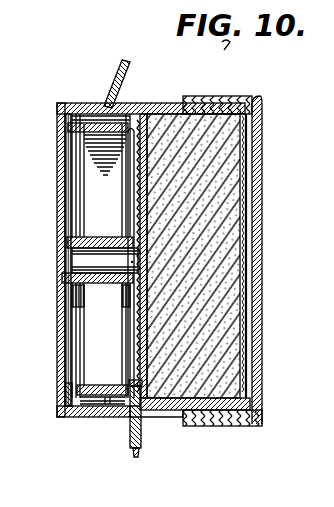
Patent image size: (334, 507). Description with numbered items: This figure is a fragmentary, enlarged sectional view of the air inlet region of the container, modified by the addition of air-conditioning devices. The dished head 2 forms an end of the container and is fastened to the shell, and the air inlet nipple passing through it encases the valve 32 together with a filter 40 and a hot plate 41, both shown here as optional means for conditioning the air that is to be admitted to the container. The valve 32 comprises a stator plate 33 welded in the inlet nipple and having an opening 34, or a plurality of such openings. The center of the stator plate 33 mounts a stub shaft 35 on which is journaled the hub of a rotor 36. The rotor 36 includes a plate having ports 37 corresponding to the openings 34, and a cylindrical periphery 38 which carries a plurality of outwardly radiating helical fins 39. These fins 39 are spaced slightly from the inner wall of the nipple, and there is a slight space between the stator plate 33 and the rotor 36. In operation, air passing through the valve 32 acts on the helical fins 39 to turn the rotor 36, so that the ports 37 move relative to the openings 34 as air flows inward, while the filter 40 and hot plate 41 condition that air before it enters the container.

The dished head 2 is at (131, 64).
The valve 32 is at (53, 378).
The stator plate 33 is at (64, 205).
The opening 34 is at (62, 313).
The stub shaft 35 is at (86, 253).
The rotor 36 is at (93, 393).
The port 37 is at (100, 177).
The cylindrical periphery 38 is at (110, 400).
The helical fin 39 is at (90, 121).
The filter 40 is at (215, 221).
The hot plate 41 is at (133, 112).